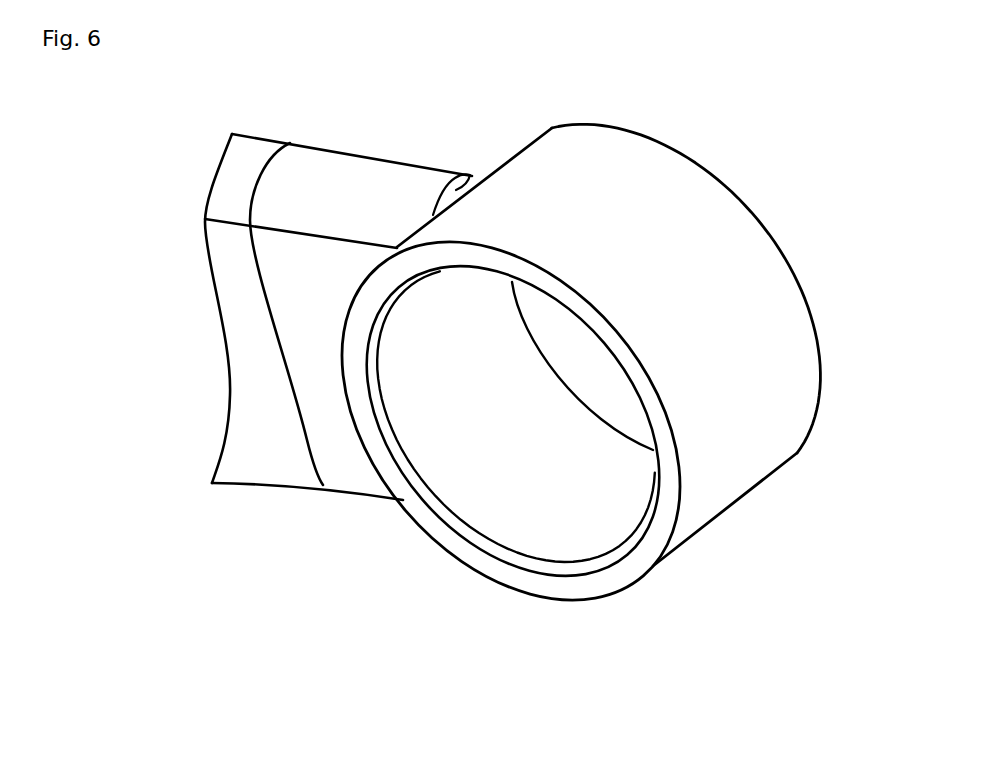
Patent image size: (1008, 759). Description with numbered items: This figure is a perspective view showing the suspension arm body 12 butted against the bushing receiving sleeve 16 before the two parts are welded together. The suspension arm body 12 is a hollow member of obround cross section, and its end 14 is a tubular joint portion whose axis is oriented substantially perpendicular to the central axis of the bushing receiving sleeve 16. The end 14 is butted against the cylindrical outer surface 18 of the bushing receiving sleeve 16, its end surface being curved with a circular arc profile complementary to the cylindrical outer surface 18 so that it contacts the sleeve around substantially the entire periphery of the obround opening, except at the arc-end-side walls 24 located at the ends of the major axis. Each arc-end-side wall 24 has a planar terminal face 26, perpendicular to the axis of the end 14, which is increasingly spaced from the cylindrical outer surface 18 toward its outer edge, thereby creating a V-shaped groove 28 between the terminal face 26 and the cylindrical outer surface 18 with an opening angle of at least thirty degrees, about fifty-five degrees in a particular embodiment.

The suspension arm body 12 is at (182, 446).
The end 14 is at (318, 417).
The bushing receiving sleeve 16 is at (790, 240).
The cylindrical outer surface 18 is at (628, 160).
The arc-end-side wall 24 is at (390, 187).
The terminal face 26 is at (468, 172).
The V-shaped groove 28 is at (482, 166).